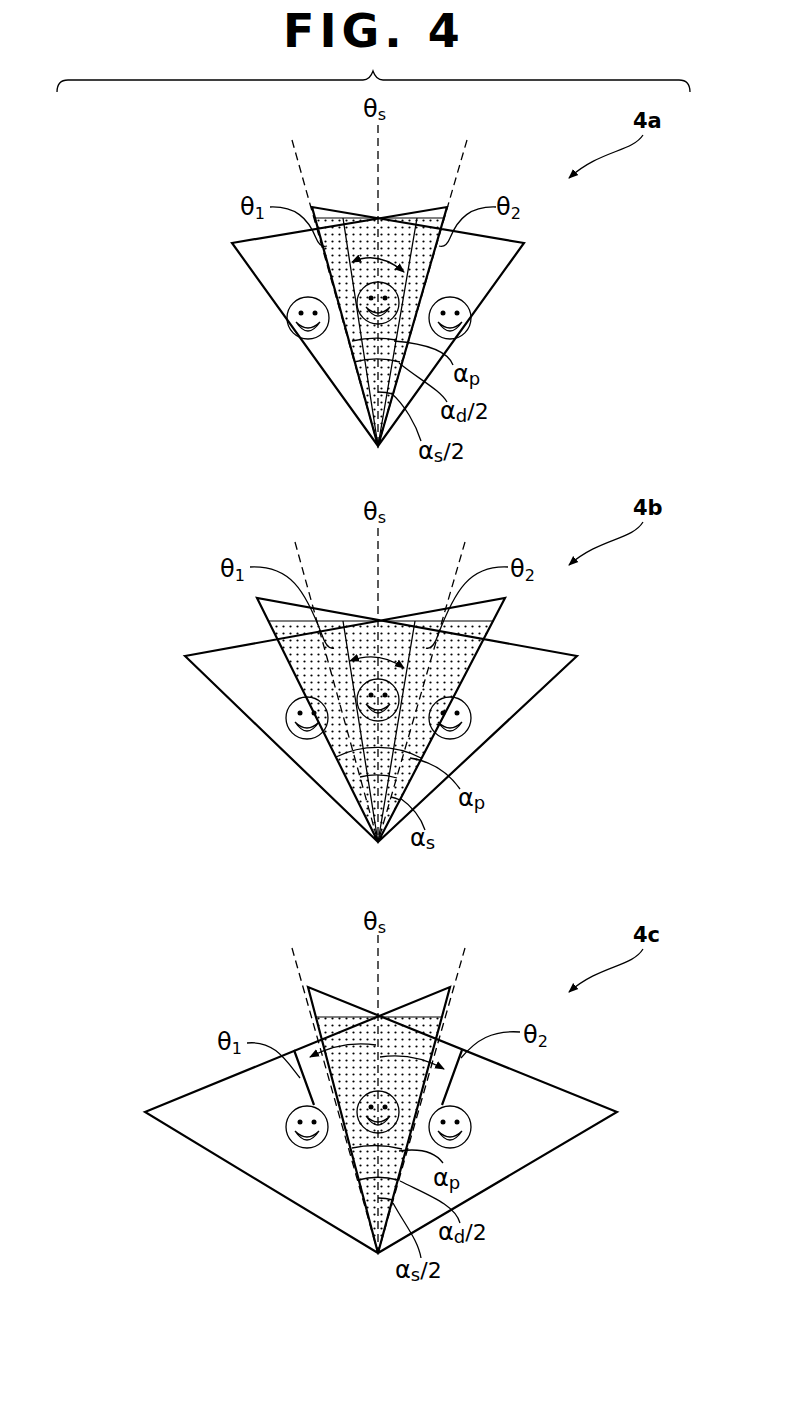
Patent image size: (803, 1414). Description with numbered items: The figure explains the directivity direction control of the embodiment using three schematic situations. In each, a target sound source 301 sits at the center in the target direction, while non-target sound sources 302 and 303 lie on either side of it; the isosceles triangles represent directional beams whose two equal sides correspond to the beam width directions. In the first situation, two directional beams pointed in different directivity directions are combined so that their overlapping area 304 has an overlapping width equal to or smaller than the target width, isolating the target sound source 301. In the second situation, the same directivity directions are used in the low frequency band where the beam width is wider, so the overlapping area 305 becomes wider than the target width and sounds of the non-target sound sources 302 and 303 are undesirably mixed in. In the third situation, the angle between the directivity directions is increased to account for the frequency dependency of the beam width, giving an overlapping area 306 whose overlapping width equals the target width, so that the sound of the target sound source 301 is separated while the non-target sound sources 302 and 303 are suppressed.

The target sound source 301 is at (414, 280).
The non-target sound source 302 is at (288, 323).
The non-target sound source 303 is at (470, 323).
The overlapping area 304 is at (412, 213).
The overlapping area 305 is at (400, 637).
The overlapping area 306 is at (404, 1038).